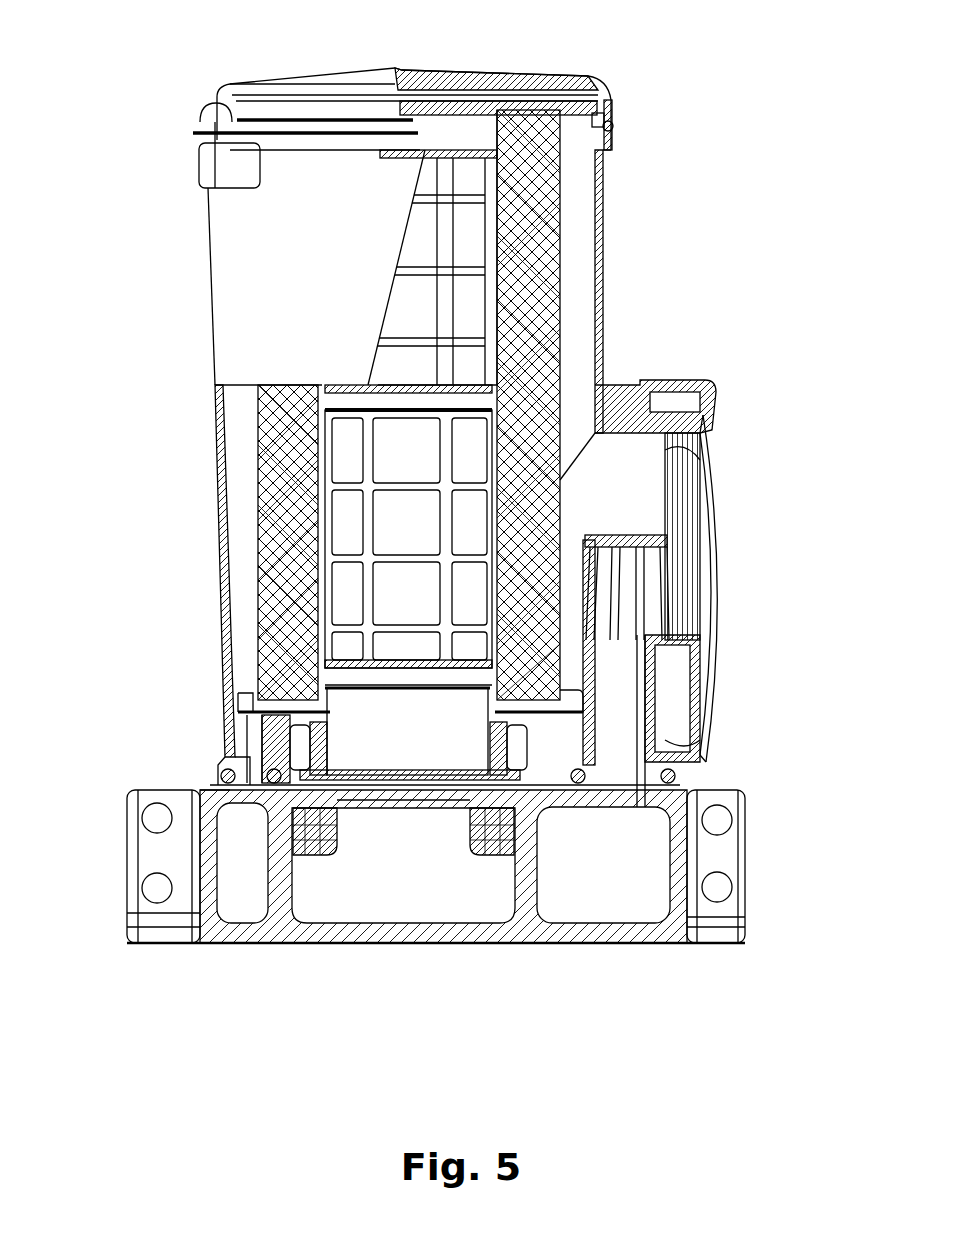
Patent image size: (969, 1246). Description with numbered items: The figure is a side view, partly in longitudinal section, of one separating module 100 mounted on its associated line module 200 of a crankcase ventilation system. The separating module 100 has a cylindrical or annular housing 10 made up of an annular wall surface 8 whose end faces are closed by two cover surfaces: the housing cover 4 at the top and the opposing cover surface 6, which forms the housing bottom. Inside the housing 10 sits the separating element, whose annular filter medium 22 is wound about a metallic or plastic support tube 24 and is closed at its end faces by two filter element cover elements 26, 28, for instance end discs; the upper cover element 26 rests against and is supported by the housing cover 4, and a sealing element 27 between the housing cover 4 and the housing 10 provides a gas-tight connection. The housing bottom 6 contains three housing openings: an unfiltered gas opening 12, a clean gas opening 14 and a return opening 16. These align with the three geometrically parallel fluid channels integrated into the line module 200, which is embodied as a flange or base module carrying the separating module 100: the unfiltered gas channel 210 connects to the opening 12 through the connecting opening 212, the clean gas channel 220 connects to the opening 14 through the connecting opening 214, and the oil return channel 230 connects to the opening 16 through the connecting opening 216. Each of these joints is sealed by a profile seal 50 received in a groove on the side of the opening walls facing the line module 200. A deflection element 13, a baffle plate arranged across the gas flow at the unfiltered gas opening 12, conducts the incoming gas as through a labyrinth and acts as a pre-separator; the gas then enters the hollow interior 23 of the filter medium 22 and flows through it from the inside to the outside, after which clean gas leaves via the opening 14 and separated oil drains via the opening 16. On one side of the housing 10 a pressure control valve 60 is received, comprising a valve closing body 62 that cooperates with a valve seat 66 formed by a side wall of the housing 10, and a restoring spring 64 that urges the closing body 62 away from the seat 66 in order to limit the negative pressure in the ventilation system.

The housing cover 4 is at (340, 76).
The cover surface 6 is at (213, 778).
The annular wall surface 8 is at (213, 410).
The housing 10 is at (450, 315).
The unfiltered gas opening 12 is at (510, 778).
The deflection element 13 is at (405, 780).
The clean gas opening 14 is at (614, 665).
The return opening 16 is at (258, 777).
The filter medium 22 is at (409, 405).
The hollow interior 23 is at (408, 535).
The support tube 24 is at (430, 182).
The filter element cover element 26 is at (569, 128).
The sealing element 27 is at (615, 122).
The filter element cover element 28 is at (562, 693).
The profile seal 50 is at (575, 770).
The pressure control valve 60 is at (748, 488).
The valve closing body 62 is at (675, 532).
The restoring spring 64 is at (626, 642).
The valve seat 66 is at (665, 632).
The separating module 100 is at (716, 196).
The line module 200 is at (764, 860).
The unfiltered gas channel 210 is at (403, 865).
The connecting opening 212 is at (400, 790).
The connecting opening 214 is at (627, 797).
The connecting opening 216 is at (248, 784).
The clean gas channel 220 is at (603, 865).
The return channel 230 is at (242, 863).